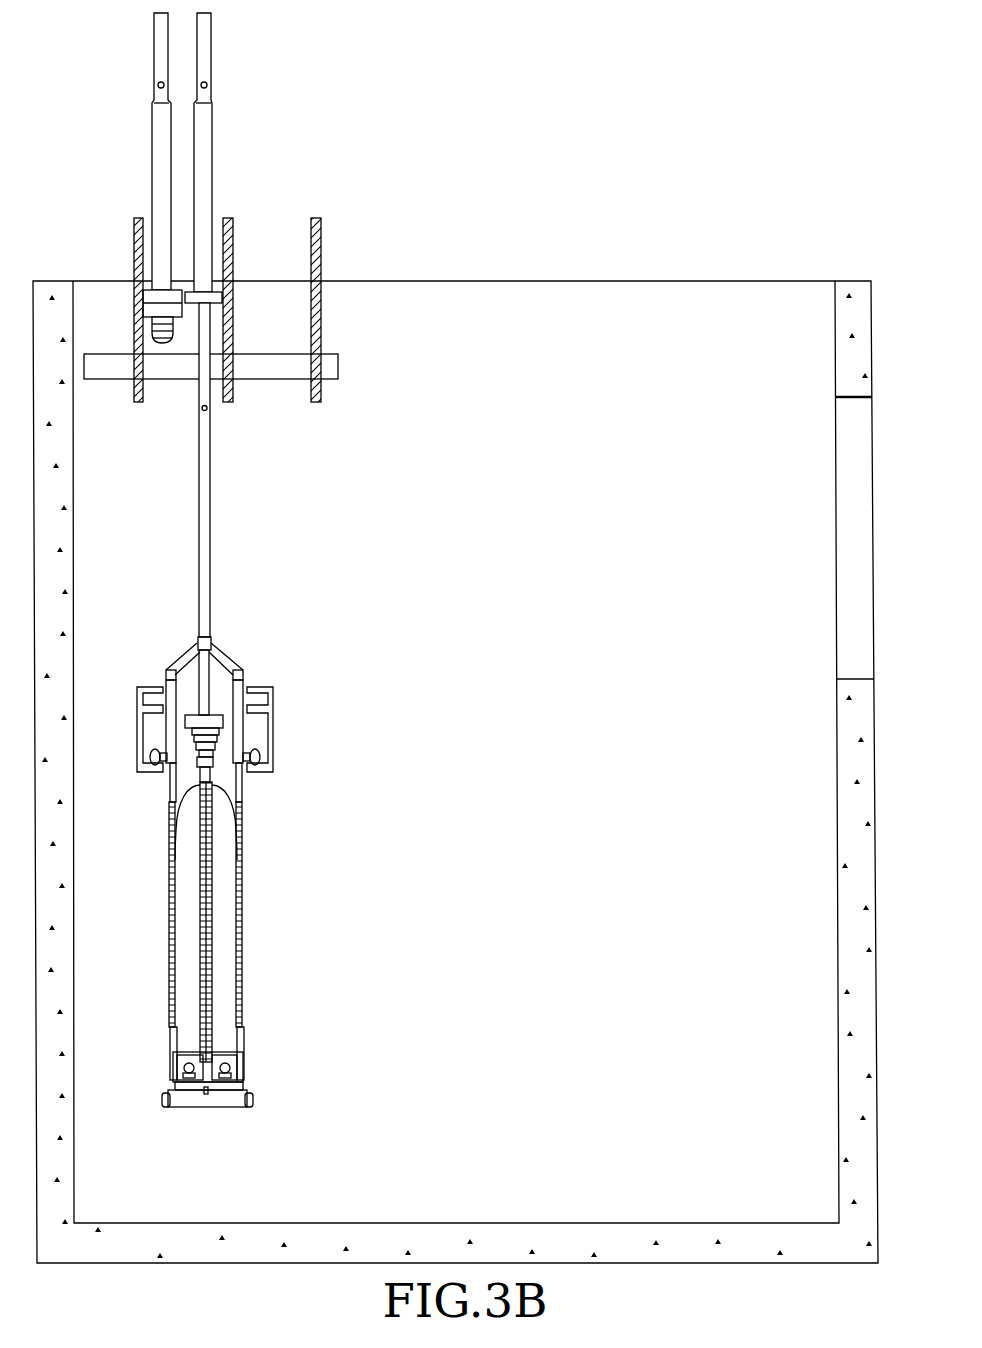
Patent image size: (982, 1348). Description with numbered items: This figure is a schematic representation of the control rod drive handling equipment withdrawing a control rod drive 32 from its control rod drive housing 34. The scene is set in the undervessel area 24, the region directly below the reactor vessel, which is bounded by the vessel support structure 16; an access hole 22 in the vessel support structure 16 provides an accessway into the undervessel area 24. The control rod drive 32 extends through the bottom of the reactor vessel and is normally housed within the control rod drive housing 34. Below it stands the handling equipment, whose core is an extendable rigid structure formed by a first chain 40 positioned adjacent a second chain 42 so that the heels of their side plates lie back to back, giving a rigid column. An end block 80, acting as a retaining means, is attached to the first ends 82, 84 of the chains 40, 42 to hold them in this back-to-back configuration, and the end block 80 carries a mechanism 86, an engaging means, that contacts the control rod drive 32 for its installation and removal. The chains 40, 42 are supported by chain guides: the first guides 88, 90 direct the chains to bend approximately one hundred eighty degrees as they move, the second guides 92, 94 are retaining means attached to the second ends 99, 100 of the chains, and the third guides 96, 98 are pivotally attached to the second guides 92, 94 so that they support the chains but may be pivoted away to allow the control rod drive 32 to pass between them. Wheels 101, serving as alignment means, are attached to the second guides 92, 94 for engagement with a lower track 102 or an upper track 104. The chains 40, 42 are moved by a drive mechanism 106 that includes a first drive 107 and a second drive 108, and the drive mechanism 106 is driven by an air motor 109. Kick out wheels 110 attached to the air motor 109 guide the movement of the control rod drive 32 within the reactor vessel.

The vessel support structure 16 is at (835, 350).
The access hole 22 is at (835, 465).
The undervessel area 24 is at (800, 1168).
The control rod drive housing 34 is at (150, 150).
The control rod drive 32 is at (211, 527).
The third guide 98 is at (197, 648).
The third guide 96 is at (215, 650).
The second guide 94 is at (165, 680).
The second guide 92 is at (247, 678).
The upper track 104 is at (258, 705).
The lower track 102 is at (268, 773).
The wheels 101 is at (152, 755).
The mechanism 86 is at (213, 762).
The end block 80 is at (210, 775).
The second end 100 is at (170, 803).
The second end 99 is at (243, 803).
The first end 84 is at (172, 862).
The first end 82 is at (240, 862).
The first chain 40 is at (212, 917).
The second chain 42 is at (200, 897).
The first guide 90 is at (173, 1068).
The first guide 88 is at (243, 1075).
The drive mechanism 106 is at (225, 1063).
The second drive 108 is at (188, 1050).
The first drive 107 is at (222, 1052).
The air motor 109 is at (175, 1088).
The kick out wheels 110 is at (243, 1105).